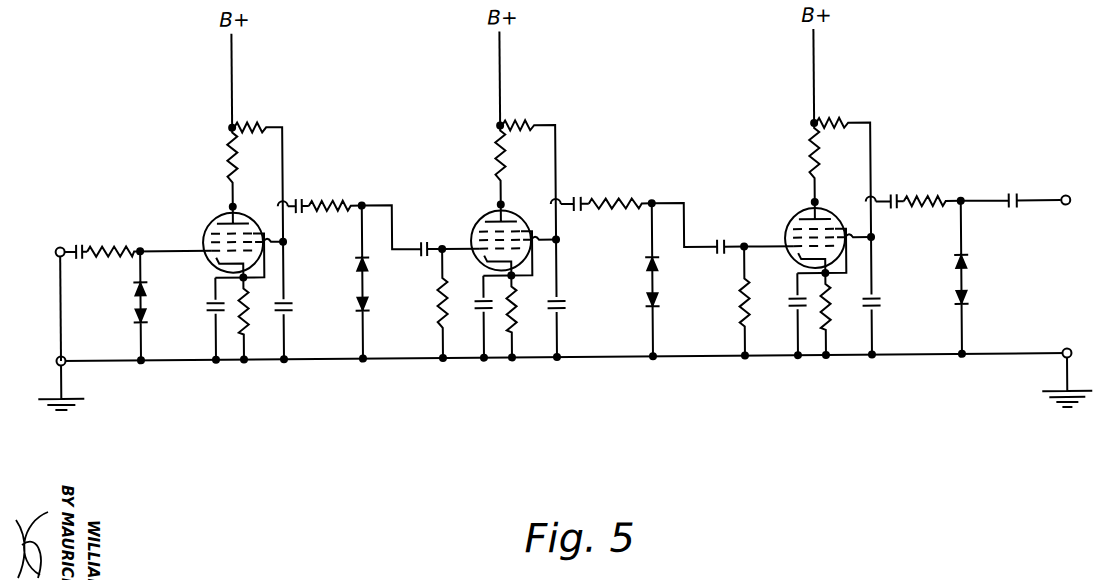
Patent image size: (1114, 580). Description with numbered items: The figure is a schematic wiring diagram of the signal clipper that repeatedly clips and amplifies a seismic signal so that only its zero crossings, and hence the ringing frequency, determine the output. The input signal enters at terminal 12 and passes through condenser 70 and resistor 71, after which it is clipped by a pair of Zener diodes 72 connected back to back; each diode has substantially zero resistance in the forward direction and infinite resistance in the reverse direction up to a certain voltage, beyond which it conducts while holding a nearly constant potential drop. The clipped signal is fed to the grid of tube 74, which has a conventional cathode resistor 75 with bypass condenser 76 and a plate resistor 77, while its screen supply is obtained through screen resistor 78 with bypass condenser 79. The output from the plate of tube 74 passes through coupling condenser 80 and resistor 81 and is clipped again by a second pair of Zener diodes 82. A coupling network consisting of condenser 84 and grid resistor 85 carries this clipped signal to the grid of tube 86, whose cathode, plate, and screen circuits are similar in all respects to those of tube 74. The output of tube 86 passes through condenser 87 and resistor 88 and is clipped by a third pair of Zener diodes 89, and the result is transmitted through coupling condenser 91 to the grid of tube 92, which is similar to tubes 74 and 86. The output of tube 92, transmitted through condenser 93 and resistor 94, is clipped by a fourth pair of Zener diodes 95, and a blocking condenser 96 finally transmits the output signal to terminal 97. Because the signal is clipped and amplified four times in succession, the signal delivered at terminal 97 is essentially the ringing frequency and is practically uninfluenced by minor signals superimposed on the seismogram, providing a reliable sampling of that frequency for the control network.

The terminal 12 is at (58, 248).
The condenser 70 is at (80, 262).
The resistor 71 is at (124, 247).
The pair of Zener diodes 72 is at (137, 300).
The tube 74 is at (208, 237).
The cathode resistor 75 is at (248, 318).
The bypass condenser 76 is at (212, 310).
The plate resistor 77 is at (231, 158).
The screen resistor 78 is at (278, 104).
The bypass condenser 79 is at (290, 306).
The coupling condenser 80 is at (314, 182).
The resistor 81 is at (360, 182).
The second pair of Zener diodes 82 is at (362, 294).
The condenser 84 is at (432, 228).
The grid resistor 85 is at (441, 305).
The tube 86 is at (484, 231).
The condenser 87 is at (577, 200).
The resistor 88 is at (622, 200).
The third pair of Zener diodes 89 is at (656, 294).
The coupling condenser 91 is at (723, 244).
The tube 92 is at (790, 236).
The condenser 93 is at (895, 200).
The resistor 94 is at (938, 200).
The fourth pair of Zener diodes 95 is at (964, 288).
The blocking condenser 96 is at (1013, 200).
The terminal 97 is at (1068, 203).